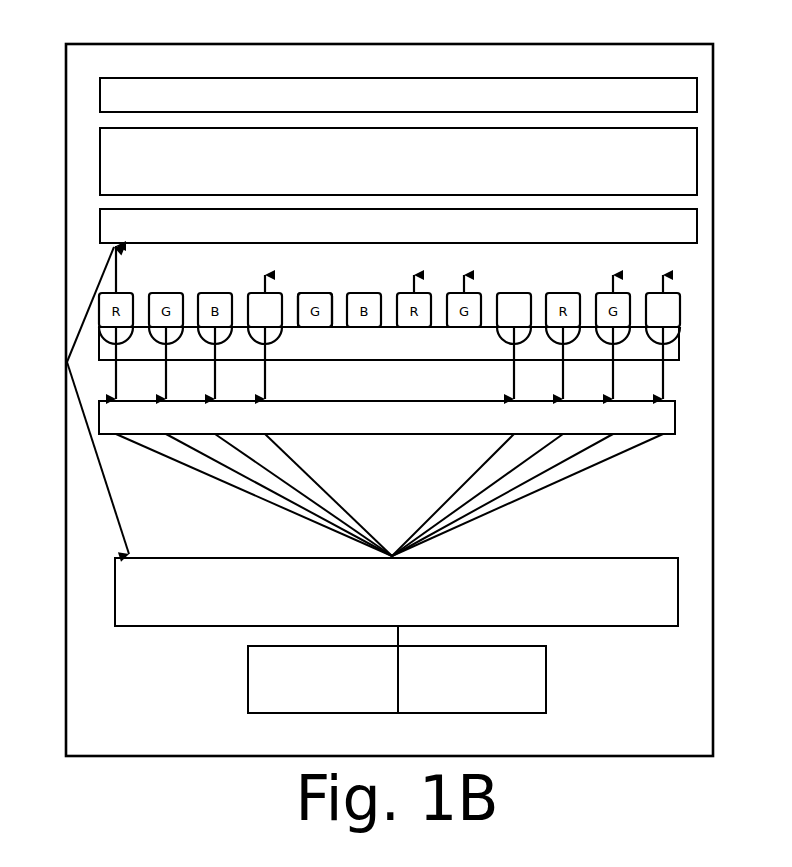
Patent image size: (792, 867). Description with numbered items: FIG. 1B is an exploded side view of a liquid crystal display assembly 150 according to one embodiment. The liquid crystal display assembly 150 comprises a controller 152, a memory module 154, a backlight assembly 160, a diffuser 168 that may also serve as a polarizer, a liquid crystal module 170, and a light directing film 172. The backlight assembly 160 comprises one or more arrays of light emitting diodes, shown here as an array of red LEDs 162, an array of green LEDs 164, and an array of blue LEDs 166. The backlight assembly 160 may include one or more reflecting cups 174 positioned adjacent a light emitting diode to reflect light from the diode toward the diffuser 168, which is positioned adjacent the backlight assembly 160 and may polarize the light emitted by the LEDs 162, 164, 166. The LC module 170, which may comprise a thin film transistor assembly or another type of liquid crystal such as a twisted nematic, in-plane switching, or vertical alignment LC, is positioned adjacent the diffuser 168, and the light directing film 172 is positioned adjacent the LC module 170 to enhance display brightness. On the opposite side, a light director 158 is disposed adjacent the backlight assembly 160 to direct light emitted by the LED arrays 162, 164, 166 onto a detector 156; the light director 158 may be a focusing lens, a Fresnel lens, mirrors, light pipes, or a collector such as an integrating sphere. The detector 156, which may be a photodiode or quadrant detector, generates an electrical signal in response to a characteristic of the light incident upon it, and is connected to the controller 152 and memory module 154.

The liquid crystal display assembly 150 is at (389, 400).
The controller 152 is at (323, 679).
The memory module 154 is at (472, 679).
The detector 156 is at (396, 592).
The light director 158 is at (387, 417).
The backlight assembly 160 is at (389, 343).
The red LEDs 162 is at (250, 293).
The green LEDs 164 is at (305, 293).
The blue LEDs 166 is at (505, 293).
The diffuser 168 is at (398, 226).
The liquid crystal module 170 is at (398, 161).
The light directing film 172 is at (398, 95).
The reflecting cup 174 is at (677, 337).